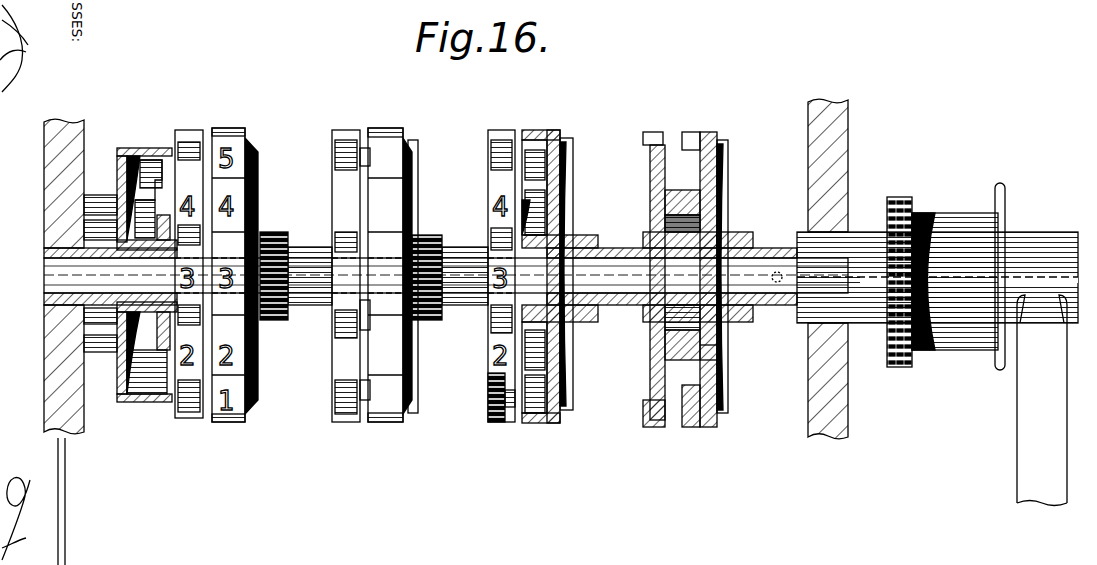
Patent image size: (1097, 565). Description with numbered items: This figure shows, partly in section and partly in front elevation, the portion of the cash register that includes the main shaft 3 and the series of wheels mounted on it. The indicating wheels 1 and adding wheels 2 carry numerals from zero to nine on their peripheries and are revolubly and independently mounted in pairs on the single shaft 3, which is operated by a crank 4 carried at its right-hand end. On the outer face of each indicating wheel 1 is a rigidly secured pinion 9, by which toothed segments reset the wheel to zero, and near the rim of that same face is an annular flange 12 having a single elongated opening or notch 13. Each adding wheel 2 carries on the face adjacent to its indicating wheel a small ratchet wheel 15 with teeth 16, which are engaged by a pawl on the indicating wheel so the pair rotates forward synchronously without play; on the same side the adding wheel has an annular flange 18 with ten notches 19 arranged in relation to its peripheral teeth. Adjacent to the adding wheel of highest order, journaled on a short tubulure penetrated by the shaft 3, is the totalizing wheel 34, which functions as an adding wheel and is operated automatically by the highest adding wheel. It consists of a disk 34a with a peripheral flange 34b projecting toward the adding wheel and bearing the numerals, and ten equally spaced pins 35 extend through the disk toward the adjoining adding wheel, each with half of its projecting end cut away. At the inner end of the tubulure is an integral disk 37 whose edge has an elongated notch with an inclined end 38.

The indicating wheel 1 is at (398, 138).
The adding wheel 2 is at (346, 148).
The main shaft 3 is at (648, 284).
The crank 4 is at (1032, 418).
The pinion 9 is at (441, 250).
The annular flange 12 is at (418, 172).
The elongated opening or notch 13 is at (418, 220).
The ratchet wheel 15 is at (722, 345).
The teeth 16 is at (722, 368).
The annular flange 18 is at (512, 407).
The notches 19 is at (493, 392).
The totalizing wheel 34 is at (147, 388).
The disk 34a is at (117, 168).
The peripheral flange 34b is at (141, 154).
The pins 35 is at (108, 352).
The disk 37 is at (84, 325).
The inclined end 38 is at (44, 298).